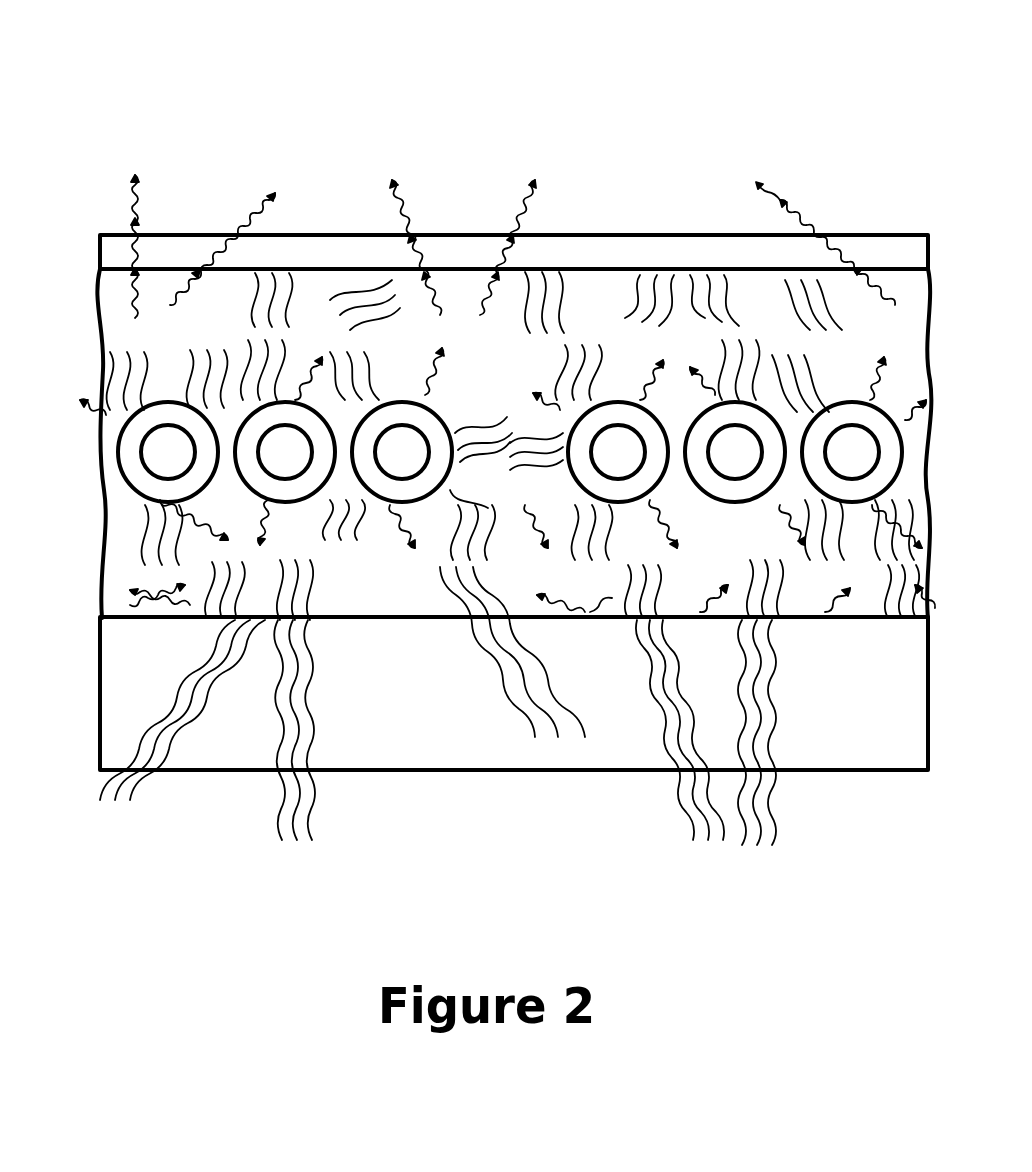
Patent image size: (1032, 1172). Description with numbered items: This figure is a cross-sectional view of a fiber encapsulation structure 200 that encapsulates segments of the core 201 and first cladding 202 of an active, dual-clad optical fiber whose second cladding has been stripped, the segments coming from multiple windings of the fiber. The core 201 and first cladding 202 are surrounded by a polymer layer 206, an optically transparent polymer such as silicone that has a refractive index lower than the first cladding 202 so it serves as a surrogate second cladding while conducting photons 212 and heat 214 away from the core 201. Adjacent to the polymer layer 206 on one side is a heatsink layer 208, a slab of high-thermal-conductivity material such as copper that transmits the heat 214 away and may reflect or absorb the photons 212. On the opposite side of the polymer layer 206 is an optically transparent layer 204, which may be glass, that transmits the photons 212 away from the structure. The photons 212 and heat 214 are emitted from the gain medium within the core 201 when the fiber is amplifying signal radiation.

The fiber encapsulation structure 200 is at (433, 97).
The core 201 is at (166, 459).
The first cladding 202 is at (131, 452).
The optically transparent layer 204 is at (696, 231).
The polymer layer 206 is at (92, 292).
The heatsink layer 208 is at (371, 771).
The photons 212 is at (810, 206).
The heat 214 is at (690, 821).